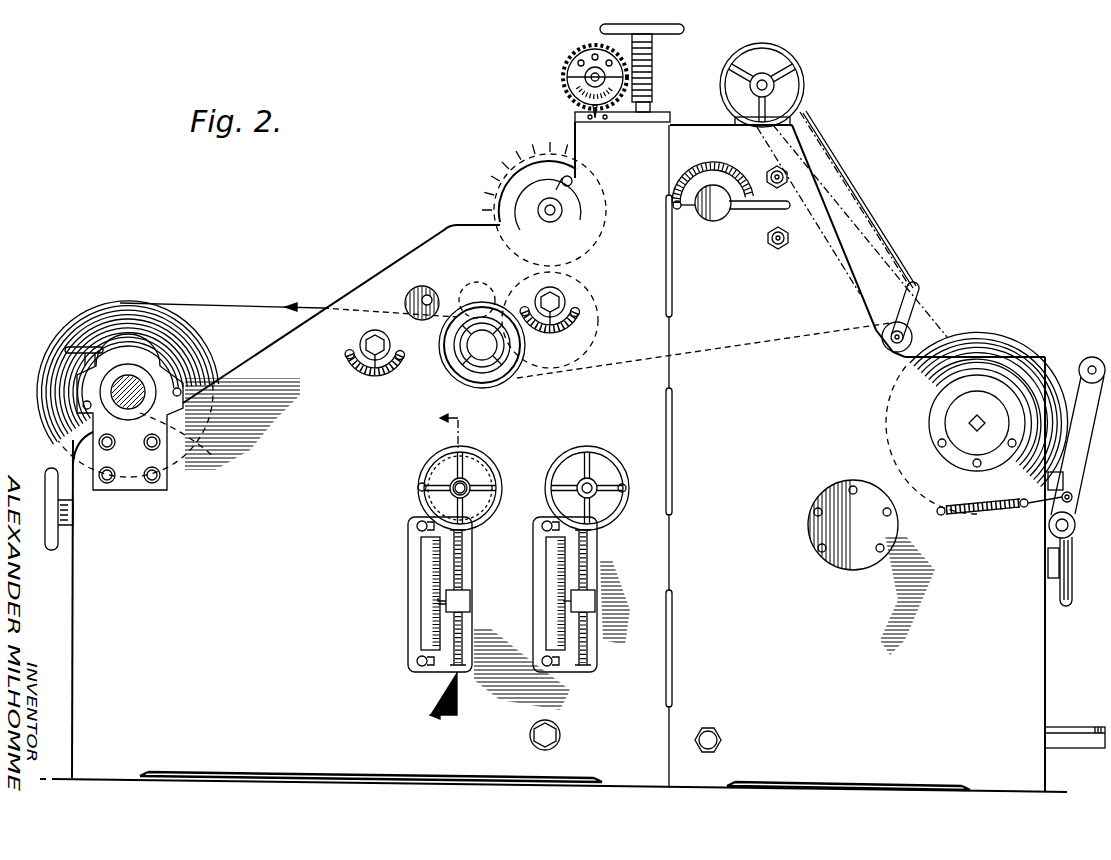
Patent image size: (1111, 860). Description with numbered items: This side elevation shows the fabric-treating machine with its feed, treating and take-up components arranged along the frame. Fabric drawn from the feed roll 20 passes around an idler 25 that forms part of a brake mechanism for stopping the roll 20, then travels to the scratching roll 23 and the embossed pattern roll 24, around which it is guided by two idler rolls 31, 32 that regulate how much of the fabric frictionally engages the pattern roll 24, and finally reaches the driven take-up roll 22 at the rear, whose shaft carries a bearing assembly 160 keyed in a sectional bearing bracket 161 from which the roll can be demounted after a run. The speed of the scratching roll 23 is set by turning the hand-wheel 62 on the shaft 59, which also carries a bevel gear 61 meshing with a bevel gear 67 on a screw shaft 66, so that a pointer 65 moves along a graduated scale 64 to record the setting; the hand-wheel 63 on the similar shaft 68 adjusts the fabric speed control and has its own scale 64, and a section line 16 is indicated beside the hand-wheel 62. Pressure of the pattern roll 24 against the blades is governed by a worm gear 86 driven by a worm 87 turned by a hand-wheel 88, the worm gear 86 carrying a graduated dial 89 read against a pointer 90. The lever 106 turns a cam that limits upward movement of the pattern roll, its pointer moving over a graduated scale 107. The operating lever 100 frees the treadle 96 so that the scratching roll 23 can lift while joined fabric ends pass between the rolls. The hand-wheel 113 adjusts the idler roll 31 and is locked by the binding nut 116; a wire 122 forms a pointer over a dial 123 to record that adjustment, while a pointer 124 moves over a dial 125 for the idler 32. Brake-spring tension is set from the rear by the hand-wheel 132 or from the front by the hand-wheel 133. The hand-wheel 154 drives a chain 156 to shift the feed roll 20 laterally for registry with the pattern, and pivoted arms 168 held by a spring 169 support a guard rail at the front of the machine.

The section line 16 is at (450, 571).
The feed roll 20 is at (990, 340).
The take-up roll 22 is at (112, 302).
The scratching roll 23 is at (497, 182).
The pattern roll 24 is at (592, 290).
The idler 25 is at (910, 328).
The idler roll 31 is at (497, 390).
The idler 32 is at (473, 284).
The shaft 59 is at (478, 487).
The bevel gear 61 is at (418, 484).
The hand-wheel 62 is at (436, 456).
The hand-wheel 63 is at (580, 450).
The graduated scale 64 is at (408, 574).
The pointer 65 is at (472, 602).
The screw shaft 66 is at (466, 560).
The bevel gear 67 is at (428, 505).
The shaft 68 is at (606, 474).
The worm gear 86 is at (563, 64).
The worm 87 is at (656, 84).
The hand-wheel 88 is at (686, 32).
The graduated dial 89 is at (574, 92).
The pointer 90 is at (596, 112).
The treadle 96 is at (1073, 726).
The operating lever 100 is at (908, 292).
The lever 106 is at (762, 212).
The graduated scale 107 is at (718, 180).
The hand-wheel 113 is at (448, 358).
The binding nut 116 is at (448, 322).
The wire 122 is at (566, 301).
The dial 123 is at (575, 322).
The pointer 124 is at (360, 343).
The dial 125 is at (376, 376).
The hand-wheel 132 is at (50, 550).
The hand-wheel 133 is at (1069, 606).
The hand-wheel 154 is at (806, 89).
The chain 156 is at (822, 124).
The bearing assembly 160 is at (150, 378).
The sectional bearing bracket 161 is at (200, 448).
The pivoted arms 168 is at (1073, 498).
The spring 169 is at (988, 518).